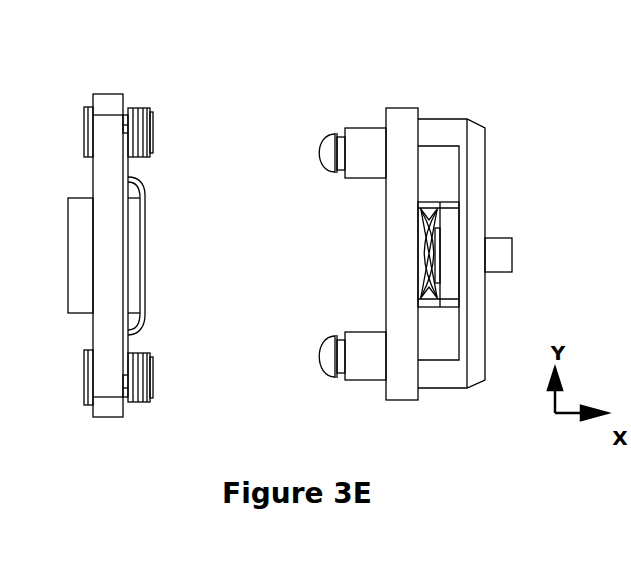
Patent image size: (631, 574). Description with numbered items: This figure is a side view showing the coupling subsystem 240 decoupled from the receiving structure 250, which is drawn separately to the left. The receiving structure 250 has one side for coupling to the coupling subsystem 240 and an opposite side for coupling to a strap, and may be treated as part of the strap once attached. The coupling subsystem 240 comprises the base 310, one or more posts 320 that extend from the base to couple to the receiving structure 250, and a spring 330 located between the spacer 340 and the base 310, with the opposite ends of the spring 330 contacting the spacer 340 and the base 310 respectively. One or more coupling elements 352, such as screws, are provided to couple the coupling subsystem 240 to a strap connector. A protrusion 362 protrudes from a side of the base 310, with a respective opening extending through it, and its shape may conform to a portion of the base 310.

The coupling subsystem 240 is at (318, 82).
The receiving structure 250 is at (106, 75).
The base 310 is at (443, 123).
The posts 320 is at (363, 148).
The spring 330 is at (420, 210).
The spacer 340 is at (405, 396).
The coupling elements 352 is at (512, 243).
The protrusion 362 is at (443, 164).